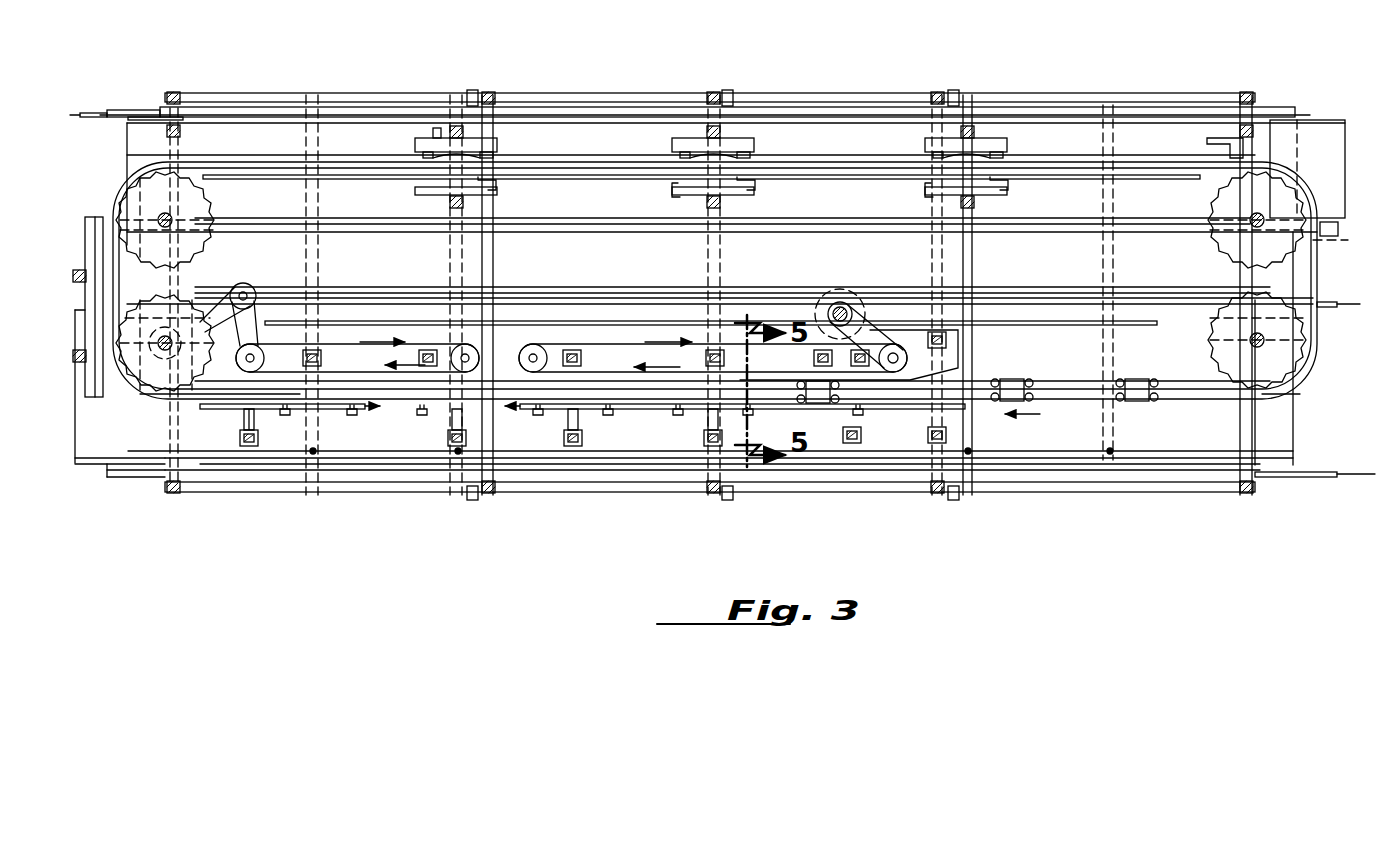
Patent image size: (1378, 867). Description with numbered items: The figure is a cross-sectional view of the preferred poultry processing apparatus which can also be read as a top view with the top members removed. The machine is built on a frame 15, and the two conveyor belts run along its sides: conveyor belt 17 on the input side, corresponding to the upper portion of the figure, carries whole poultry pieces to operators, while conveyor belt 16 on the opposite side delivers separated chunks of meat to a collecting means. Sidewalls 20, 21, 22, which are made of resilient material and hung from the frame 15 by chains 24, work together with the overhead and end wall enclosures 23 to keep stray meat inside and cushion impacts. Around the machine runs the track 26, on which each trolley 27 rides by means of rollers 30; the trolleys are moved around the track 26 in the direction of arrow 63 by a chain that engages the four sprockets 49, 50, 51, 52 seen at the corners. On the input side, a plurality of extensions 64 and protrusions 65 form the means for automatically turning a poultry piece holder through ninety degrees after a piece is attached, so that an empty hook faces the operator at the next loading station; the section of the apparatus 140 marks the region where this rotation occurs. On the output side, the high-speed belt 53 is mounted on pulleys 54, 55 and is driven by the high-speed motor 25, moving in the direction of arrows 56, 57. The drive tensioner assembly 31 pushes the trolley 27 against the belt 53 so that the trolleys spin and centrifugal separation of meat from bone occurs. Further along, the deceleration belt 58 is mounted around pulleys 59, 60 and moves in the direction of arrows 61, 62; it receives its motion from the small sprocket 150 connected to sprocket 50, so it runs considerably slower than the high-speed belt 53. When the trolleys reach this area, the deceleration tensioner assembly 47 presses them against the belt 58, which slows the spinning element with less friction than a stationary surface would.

The frame 15 is at (835, 112).
The conveyor belt 16 is at (1272, 440).
The conveyor belt 17 is at (1300, 140).
The sidewall 20 is at (1180, 458).
The sidewall 21 is at (645, 455).
The sidewall 22 is at (360, 458).
The overhead and end wall enclosures 23 is at (922, 345).
The chains 24 is at (313, 453).
The high-speed motor 25 is at (846, 290).
The track 26 is at (608, 165).
The trolley 27 is at (812, 380).
The rollers 30 is at (836, 404).
The drive tensioner assembly 31 is at (628, 425).
The deceleration tensioner assembly 47 is at (384, 440).
The sprocket 49 is at (140, 200).
The sprocket 50 is at (150, 378).
The sprocket 51 is at (1228, 250).
The sprocket 52 is at (1290, 364).
The high-speed belt 53 is at (572, 344).
The pulley 54 is at (532, 344).
The pulley 55 is at (890, 301).
The arrow 56 is at (657, 340).
The arrow 57 is at (665, 367).
The deceleration belt 58 is at (342, 320).
The pulley 59 is at (271, 300).
The pulley 60 is at (456, 344).
The arrow 61 is at (387, 305).
The arrow 62 is at (383, 406).
The arrow 63 is at (1032, 416).
The extensions 64 is at (470, 158).
The protrusions 65 is at (487, 190).
The section of the apparatus 140 is at (437, 128).
The small sprocket 150 is at (161, 410).